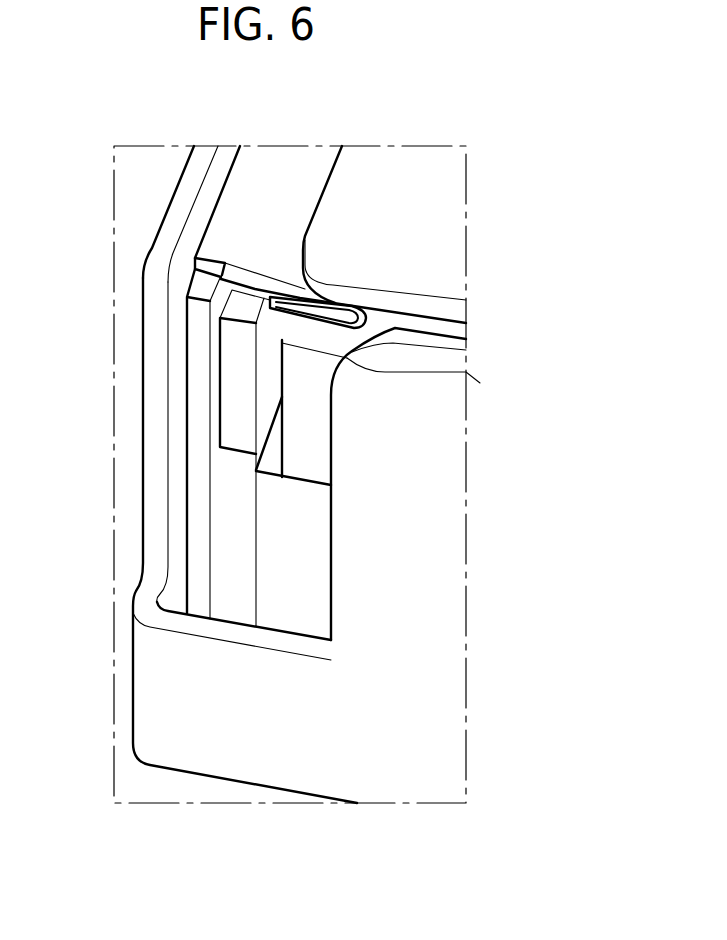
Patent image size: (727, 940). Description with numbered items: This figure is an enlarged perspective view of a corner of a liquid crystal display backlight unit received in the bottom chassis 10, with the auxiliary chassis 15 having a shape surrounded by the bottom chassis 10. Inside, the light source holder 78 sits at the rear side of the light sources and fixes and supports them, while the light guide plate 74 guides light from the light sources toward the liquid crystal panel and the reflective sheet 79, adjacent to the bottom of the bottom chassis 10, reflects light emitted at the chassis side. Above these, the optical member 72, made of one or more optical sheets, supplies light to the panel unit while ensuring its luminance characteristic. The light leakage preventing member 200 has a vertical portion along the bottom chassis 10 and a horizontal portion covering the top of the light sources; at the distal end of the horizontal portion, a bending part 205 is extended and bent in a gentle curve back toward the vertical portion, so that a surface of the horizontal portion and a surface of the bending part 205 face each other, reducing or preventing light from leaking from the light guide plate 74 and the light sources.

The bottom chassis 10 is at (410, 678).
The auxiliary chassis 15 is at (293, 598).
The optical member 72 is at (388, 212).
The light guide plate 74 is at (318, 458).
The light source holder 78 is at (238, 428).
The reflective sheet 79 is at (308, 482).
The light leakage preventing member 200 is at (289, 170).
The bending part 205 is at (333, 332).